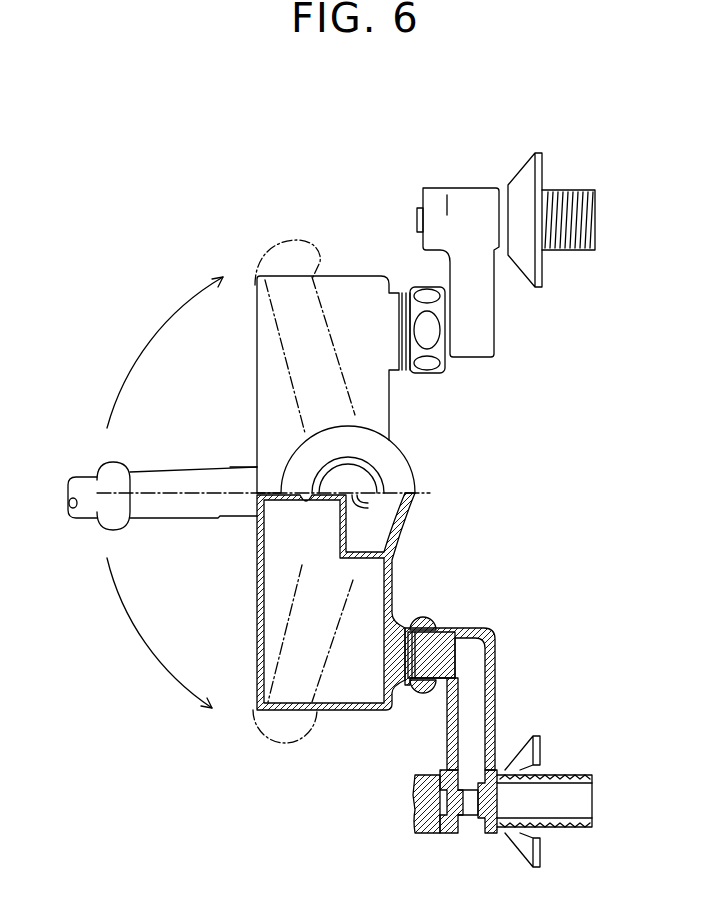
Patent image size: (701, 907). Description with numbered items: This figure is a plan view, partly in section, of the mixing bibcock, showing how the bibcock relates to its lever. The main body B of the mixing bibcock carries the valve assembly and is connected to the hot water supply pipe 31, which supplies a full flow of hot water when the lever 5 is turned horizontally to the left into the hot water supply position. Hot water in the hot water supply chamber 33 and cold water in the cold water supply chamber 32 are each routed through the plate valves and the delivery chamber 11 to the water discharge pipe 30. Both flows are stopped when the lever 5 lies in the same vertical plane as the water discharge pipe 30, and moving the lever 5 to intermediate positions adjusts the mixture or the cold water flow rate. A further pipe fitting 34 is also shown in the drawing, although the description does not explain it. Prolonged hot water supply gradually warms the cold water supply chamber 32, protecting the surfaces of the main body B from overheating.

The lever 5 is at (150, 472).
The water discharge pipe 30 is at (93, 473).
The hot water supply chamber 33 is at (333, 312).
The hot water supply pipe 31 is at (483, 305).
The cold water supply chamber 32 is at (333, 685).
The delivery chamber 11 is at (377, 533).
The main body B is at (355, 708).
The outlet pipe 34 is at (470, 697).